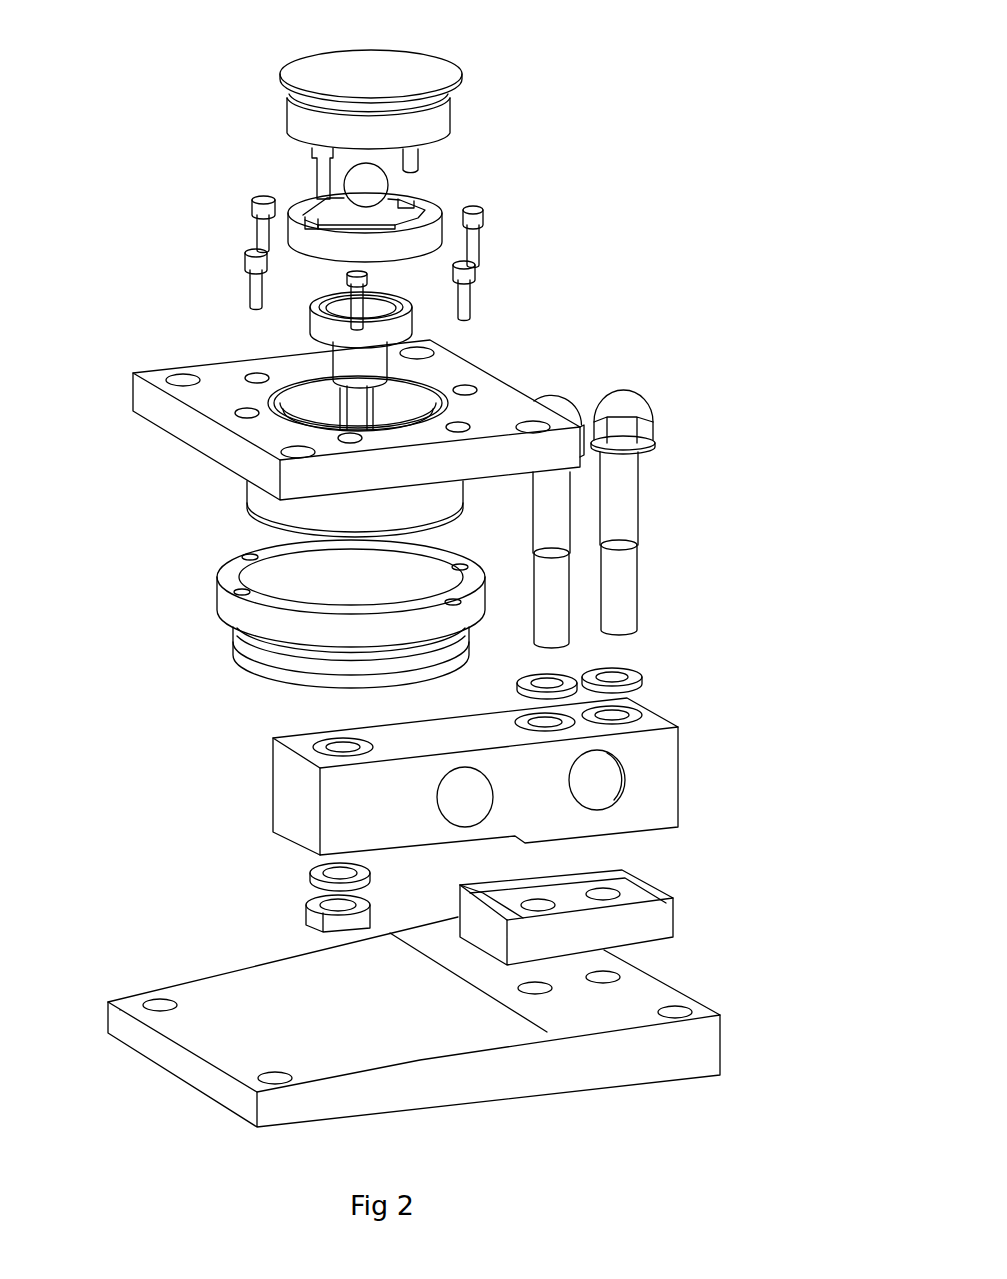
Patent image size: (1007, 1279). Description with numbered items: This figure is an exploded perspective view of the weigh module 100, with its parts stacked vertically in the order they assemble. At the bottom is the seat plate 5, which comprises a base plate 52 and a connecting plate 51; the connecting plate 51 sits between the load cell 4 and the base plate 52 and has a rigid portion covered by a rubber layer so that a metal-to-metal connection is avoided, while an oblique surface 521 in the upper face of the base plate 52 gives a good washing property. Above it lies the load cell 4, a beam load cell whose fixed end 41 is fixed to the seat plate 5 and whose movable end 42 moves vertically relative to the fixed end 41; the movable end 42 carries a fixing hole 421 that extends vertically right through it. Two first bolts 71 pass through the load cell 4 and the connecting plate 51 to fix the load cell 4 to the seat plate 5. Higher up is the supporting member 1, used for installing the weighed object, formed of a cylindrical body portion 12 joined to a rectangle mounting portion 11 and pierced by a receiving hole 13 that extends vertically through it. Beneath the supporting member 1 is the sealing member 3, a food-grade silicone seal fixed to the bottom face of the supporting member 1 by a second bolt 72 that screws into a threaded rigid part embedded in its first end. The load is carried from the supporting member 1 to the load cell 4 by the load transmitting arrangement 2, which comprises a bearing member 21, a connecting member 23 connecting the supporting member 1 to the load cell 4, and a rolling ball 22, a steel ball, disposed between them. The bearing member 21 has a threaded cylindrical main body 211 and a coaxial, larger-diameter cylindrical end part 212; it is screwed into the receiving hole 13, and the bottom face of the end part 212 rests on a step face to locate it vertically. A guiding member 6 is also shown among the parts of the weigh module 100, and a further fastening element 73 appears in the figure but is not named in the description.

The weigh module 100 is at (416, 27).
The supporting member 1 is at (73, 415).
The rectangle mounting portion 11 is at (178, 422).
The cylindrical body portion 12 is at (250, 492).
The receiving hole 13 is at (317, 410).
The load transmitting arrangement 2 is at (657, 115).
The bearing member 21 is at (452, 118).
The main body 211 is at (317, 125).
The end part 212 is at (283, 87).
The rolling ball 22 is at (373, 185).
The connecting member 23 is at (397, 327).
The sealing member 3 is at (233, 632).
The load cell 4 is at (655, 778).
The fixed end 41 is at (657, 753).
The movable end 42 is at (325, 758).
The fixing hole 421 is at (343, 748).
The seat plate 5 is at (835, 905).
The connecting plate 51 is at (655, 923).
The base plate 52 is at (687, 1043).
The oblique surface 521 is at (250, 1025).
The guiding member 6 is at (317, 240).
The first bolt 71 is at (617, 520).
The second bolt 72 is at (253, 290).
The pin 73 is at (320, 173).